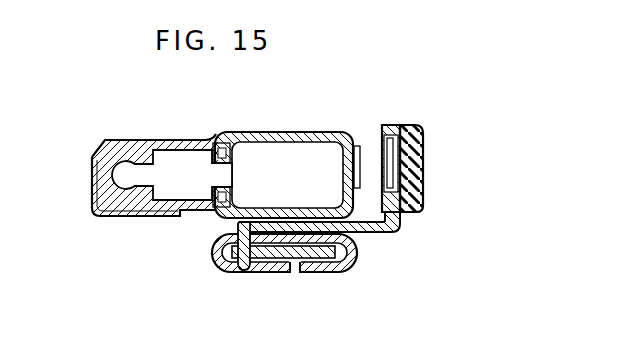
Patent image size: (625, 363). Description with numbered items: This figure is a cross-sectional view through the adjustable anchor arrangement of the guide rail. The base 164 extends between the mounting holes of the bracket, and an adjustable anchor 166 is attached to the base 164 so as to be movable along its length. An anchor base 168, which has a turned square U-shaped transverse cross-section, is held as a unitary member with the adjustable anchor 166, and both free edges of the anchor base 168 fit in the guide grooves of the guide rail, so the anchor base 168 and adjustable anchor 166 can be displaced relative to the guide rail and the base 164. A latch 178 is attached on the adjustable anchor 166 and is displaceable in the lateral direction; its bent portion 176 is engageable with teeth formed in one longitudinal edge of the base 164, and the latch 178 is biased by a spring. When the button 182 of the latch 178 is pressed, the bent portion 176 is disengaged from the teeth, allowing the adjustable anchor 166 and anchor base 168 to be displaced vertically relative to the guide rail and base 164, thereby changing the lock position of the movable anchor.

The base 164 is at (325, 254).
The adjustable anchor 166 is at (360, 250).
The anchor base 168 is at (293, 130).
The bent portion 176 is at (266, 272).
The latch 178 is at (402, 223).
The button 182 is at (424, 157).